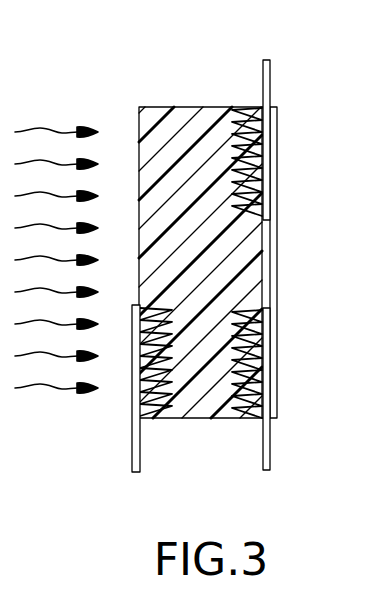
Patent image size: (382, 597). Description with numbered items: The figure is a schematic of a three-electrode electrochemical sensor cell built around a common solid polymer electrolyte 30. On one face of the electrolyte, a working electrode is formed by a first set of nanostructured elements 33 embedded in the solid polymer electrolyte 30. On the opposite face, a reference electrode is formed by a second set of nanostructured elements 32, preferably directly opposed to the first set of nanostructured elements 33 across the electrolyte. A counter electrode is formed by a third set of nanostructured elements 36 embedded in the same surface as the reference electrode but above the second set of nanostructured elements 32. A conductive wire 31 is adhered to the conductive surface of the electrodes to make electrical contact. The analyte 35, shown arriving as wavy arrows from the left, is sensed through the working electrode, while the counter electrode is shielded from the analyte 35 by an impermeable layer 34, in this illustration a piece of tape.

The solid polymer electrolyte 30 is at (183, 138).
The conductive wire 31 is at (270, 88).
The second set of nanostructured elements 32 is at (240, 306).
The first set of nanostructured elements 33 is at (173, 418).
The impermeable layer 34 is at (270, 297).
The analyte 35 is at (103, 115).
The third set of nanostructured elements 36 is at (246, 120).